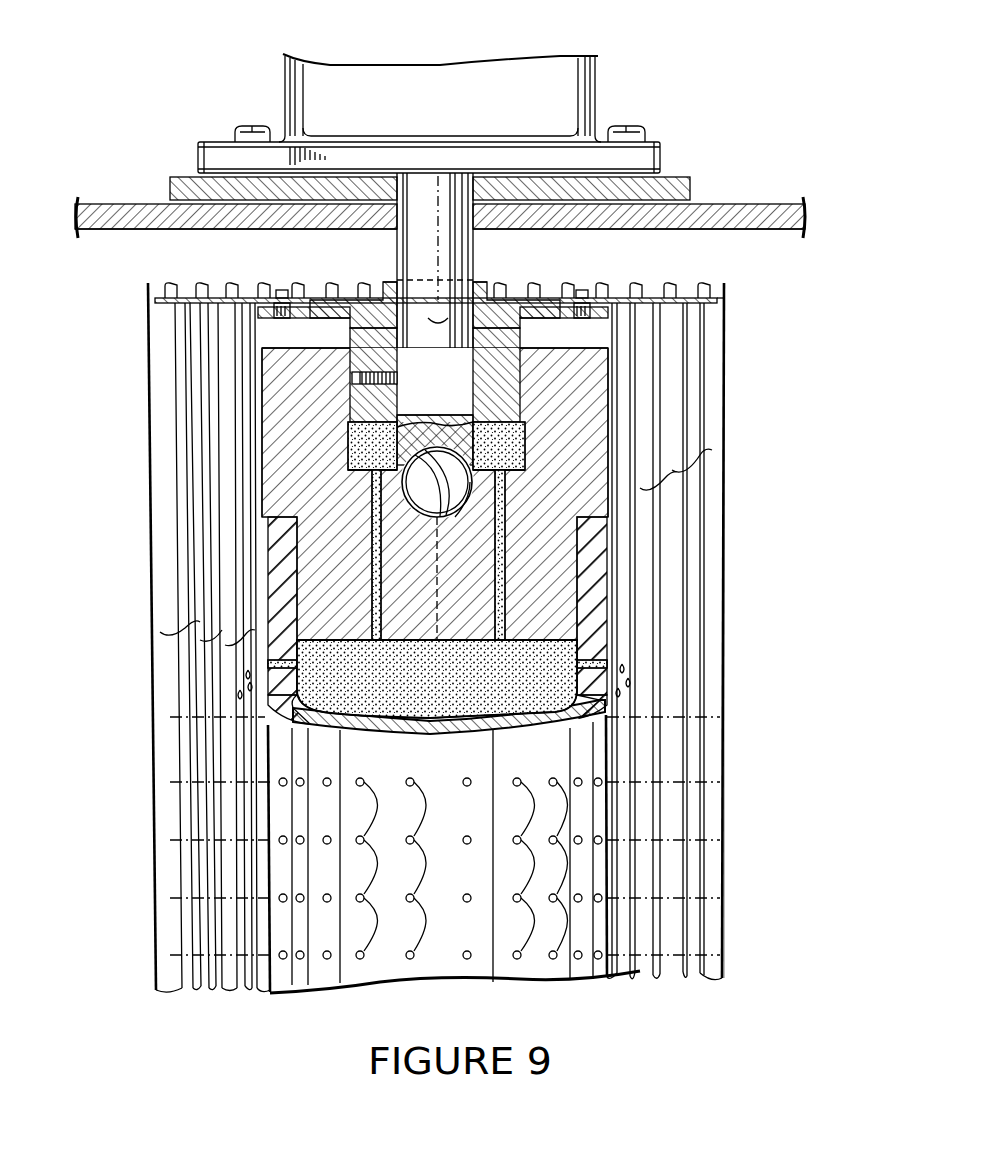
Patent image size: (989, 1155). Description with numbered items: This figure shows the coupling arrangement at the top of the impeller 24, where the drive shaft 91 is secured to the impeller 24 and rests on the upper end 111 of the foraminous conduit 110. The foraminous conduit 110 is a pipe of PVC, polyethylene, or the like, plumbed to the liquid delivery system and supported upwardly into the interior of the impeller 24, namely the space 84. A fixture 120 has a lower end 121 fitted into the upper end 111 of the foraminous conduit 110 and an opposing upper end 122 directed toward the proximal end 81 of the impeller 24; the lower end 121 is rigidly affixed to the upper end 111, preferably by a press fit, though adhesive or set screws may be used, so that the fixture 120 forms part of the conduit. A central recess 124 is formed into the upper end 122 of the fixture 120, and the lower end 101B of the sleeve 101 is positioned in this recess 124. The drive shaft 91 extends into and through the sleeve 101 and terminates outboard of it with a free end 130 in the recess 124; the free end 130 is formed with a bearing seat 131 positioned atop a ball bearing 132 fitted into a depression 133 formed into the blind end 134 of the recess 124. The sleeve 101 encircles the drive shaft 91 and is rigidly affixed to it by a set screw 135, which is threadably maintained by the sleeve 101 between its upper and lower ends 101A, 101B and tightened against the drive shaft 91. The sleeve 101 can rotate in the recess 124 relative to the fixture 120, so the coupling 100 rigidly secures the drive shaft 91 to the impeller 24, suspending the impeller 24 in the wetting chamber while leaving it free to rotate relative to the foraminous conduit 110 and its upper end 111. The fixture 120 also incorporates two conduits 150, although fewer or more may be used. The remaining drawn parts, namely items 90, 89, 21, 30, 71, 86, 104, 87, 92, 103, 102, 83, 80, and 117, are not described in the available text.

The pipe 90 is at (600, 72).
The bolts 89 is at (238, 132).
The mounting block 21 is at (713, 192).
The mounting plate 30 is at (773, 204).
The plate underside 71 is at (778, 232).
The proximal end 81 is at (690, 285).
The flange ring 86 is at (625, 298).
The fasteners 104 is at (282, 298).
The seal flange 87 is at (486, 292).
The drive shaft 91 is at (474, 255).
The upper end 101A is at (436, 324).
The tube step 92 is at (388, 282).
The stepped collar 103 is at (320, 300).
The gasket bar 102 is at (260, 305).
The upper end 122 is at (260, 372).
The set screw 135 is at (262, 405).
The coupling 100 is at (520, 392).
The sleeve 101 is at (352, 378).
The central recess 124 is at (493, 448).
The lower end 101B is at (350, 440).
The blind end 134 is at (525, 470).
The depression 133 is at (402, 483).
The cooling fins 83 is at (152, 636).
The fixture 120 is at (610, 510).
The free end 130 is at (420, 505).
The ball bearing 132 is at (455, 492).
The bearing seat 131 is at (460, 520).
The conduits 150 is at (372, 532).
The upper end 111 is at (270, 533).
The housing 80 is at (725, 560).
The impeller 24 is at (718, 642).
The foraminous conduit 110 is at (600, 630).
The lower end 121 is at (335, 640).
The space 84 is at (439, 874).
The perforations 117 is at (388, 767).